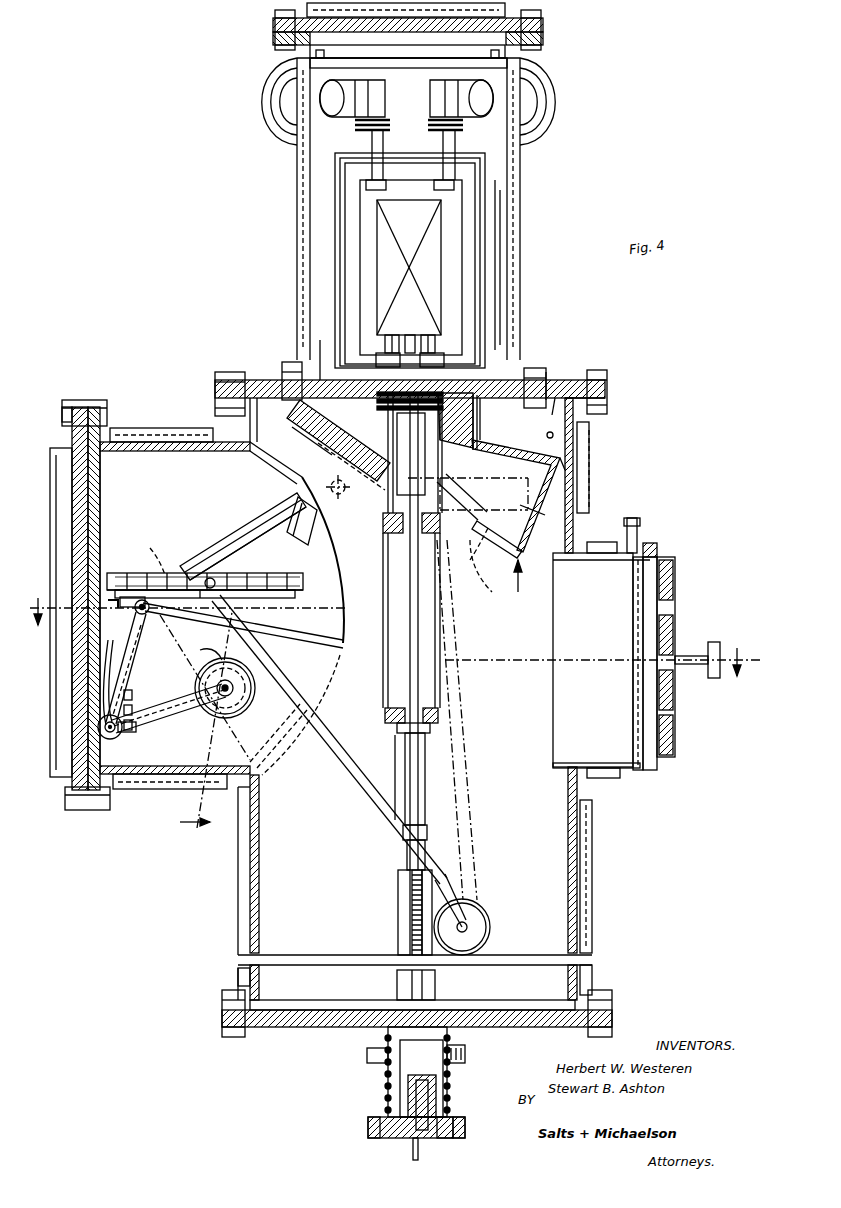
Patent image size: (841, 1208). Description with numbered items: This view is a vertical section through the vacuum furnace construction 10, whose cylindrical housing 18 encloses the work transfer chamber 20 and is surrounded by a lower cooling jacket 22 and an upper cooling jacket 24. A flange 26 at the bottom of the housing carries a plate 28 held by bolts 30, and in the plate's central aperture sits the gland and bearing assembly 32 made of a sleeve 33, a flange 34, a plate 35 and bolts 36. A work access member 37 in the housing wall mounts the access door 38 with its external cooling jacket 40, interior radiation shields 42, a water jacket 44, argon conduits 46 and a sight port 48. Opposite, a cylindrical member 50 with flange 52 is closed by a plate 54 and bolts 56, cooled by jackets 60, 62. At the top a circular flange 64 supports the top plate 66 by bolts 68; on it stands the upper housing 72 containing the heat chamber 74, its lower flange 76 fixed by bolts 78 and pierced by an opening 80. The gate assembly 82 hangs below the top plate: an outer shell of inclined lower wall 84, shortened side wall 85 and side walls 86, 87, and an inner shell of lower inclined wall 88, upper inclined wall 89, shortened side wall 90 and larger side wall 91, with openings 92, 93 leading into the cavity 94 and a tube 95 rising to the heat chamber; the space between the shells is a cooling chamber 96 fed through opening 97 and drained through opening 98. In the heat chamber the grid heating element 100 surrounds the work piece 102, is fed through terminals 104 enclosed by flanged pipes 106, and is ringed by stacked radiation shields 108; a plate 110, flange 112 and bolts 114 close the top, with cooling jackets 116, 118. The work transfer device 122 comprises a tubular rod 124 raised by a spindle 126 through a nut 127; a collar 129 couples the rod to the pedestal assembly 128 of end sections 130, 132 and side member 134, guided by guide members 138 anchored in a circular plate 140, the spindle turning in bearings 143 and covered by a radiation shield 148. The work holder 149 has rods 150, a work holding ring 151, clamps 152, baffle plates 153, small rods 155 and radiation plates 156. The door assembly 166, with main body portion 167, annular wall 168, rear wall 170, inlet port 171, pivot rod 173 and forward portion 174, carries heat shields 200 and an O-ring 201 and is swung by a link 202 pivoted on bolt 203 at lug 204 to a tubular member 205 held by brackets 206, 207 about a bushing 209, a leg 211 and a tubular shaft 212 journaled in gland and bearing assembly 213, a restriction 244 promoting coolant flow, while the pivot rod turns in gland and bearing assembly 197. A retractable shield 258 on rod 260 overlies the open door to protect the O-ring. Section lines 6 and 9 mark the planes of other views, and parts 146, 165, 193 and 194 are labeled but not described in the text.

The section line 6- 6 is at (391, 637).
The section line 9- 9 is at (199, 721).
The furnace construction 10 is at (222, 888).
The housing 18 is at (578, 520).
The work transfer chamber 20 is at (555, 790).
The lower cooling jacket 22 is at (592, 890).
The upper cooling jacket 24 is at (575, 455).
The flange 26 is at (580, 1028).
The plate 28 is at (540, 1012).
The bolts 30 is at (605, 990).
The gland and bearing assembly 32 is at (385, 1080).
The sleeve 33 is at (447, 1068).
The flange 34 is at (440, 1108).
The plate 35 is at (465, 1130).
The bolts 36 is at (465, 1120).
The work access member 37 is at (622, 770).
The access door 38 is at (657, 550).
The external cooling jacket 40 is at (667, 580).
The radiation shields 42 is at (660, 624).
The water jacket 44 is at (600, 542).
The tubular conduits 46 is at (637, 530).
The sight port 48 is at (716, 640).
The cylindrical member 50 is at (135, 445).
The flange 52 is at (92, 407).
The plate 54 is at (78, 400).
The bolts 56 is at (62, 412).
The cooling jacket 60 is at (170, 428).
The cooling jacket 62 is at (55, 500).
The circular flange 64 is at (607, 398).
The top plate 66 is at (560, 378).
The bolts 68 is at (607, 374).
The upper housing 72 is at (512, 308).
The heat chamber 74 is at (497, 240).
The lower flange 76 is at (535, 366).
The bolts 78 is at (546, 372).
The opening 80 is at (318, 365).
The gate assembly 82 is at (524, 583).
The inclined lower wall 84 is at (306, 441).
The shortened side wall 85 is at (295, 416).
The continuous side wall 86 is at (565, 478).
The continuous side wall 87 is at (588, 440).
The lower inclined wall 88 is at (515, 540).
The upper inclined wall 89 is at (490, 452).
The shortened side wall 90 is at (341, 466).
The larger side wall 91 is at (540, 505).
The opening 92 is at (474, 552).
The opening 93 is at (478, 500).
The cavity 94 is at (500, 465).
The tube 95 is at (478, 412).
The cooling chamber 96 is at (552, 400).
The opening 97 is at (580, 420).
The opening 98 is at (290, 362).
The heating element 100 is at (434, 190).
The work piece 102 is at (435, 228).
The terminals 104 is at (444, 133).
The flanged pipes 106 is at (266, 128).
The radiation shields 108 is at (475, 195).
The plate 110 is at (410, 30).
The flange 112 is at (543, 38).
The bolts 114 is at (560, 6).
The cooling jacket 116 is at (296, 190).
The cooling jacket 118 is at (305, 8).
The work transfer device 122 is at (378, 896).
The tubular rod 124 is at (425, 795).
The spindle 126 is at (410, 910).
The nut 127 is at (410, 850).
The pedestal assembly 128 is at (455, 720).
The collar 129 is at (397, 728).
The end section 130 is at (383, 522).
The end section 132 is at (385, 712).
The side member 134 is at (383, 660).
The guide members 138 is at (395, 770).
The circular plate 140 is at (367, 1058).
The bearings 143 is at (430, 1090).
The rod 146 is at (430, 470).
The radiation shield 148 is at (425, 456).
The work holder 149 is at (410, 333).
The rods 150 is at (386, 362).
The work holding ring 151 is at (438, 336).
The work holding clamps 152 is at (395, 336).
The radiation baffle plates 153 is at (459, 420).
The small rods 155 is at (454, 417).
The radiation plates 156 is at (427, 399).
The phantom line 165 is at (175, 625).
The door assembly 166 is at (186, 570).
The main body portion 167 is at (108, 572).
The annular wall 168 is at (303, 585).
The rear wall 170 is at (492, 416).
The inlet port 171 is at (200, 599).
The tubular pivot rod 173 is at (354, 812).
The forward portion 174 is at (310, 545).
The roller 193 is at (202, 560).
The bar 194 is at (212, 560).
The gland and bearing assembly 197 is at (490, 915).
The heat shields 200 is at (222, 560).
The O-ring 201 is at (118, 610).
The link 202 is at (130, 678).
The bolt 203 is at (150, 612).
The lug 204 is at (150, 601).
The tubular member 205 is at (126, 732).
The U-shaped bracket 206 is at (132, 700).
The U-shaped bracket 207 is at (110, 739).
The bushing 209 is at (112, 676).
The leg 211 is at (160, 720).
The tubular shaft 212 is at (240, 700).
The gland and bearing assembly 213 is at (205, 652).
The restriction 244 is at (240, 688).
The retractable shield 258 is at (347, 630).
The rod 260 is at (310, 640).